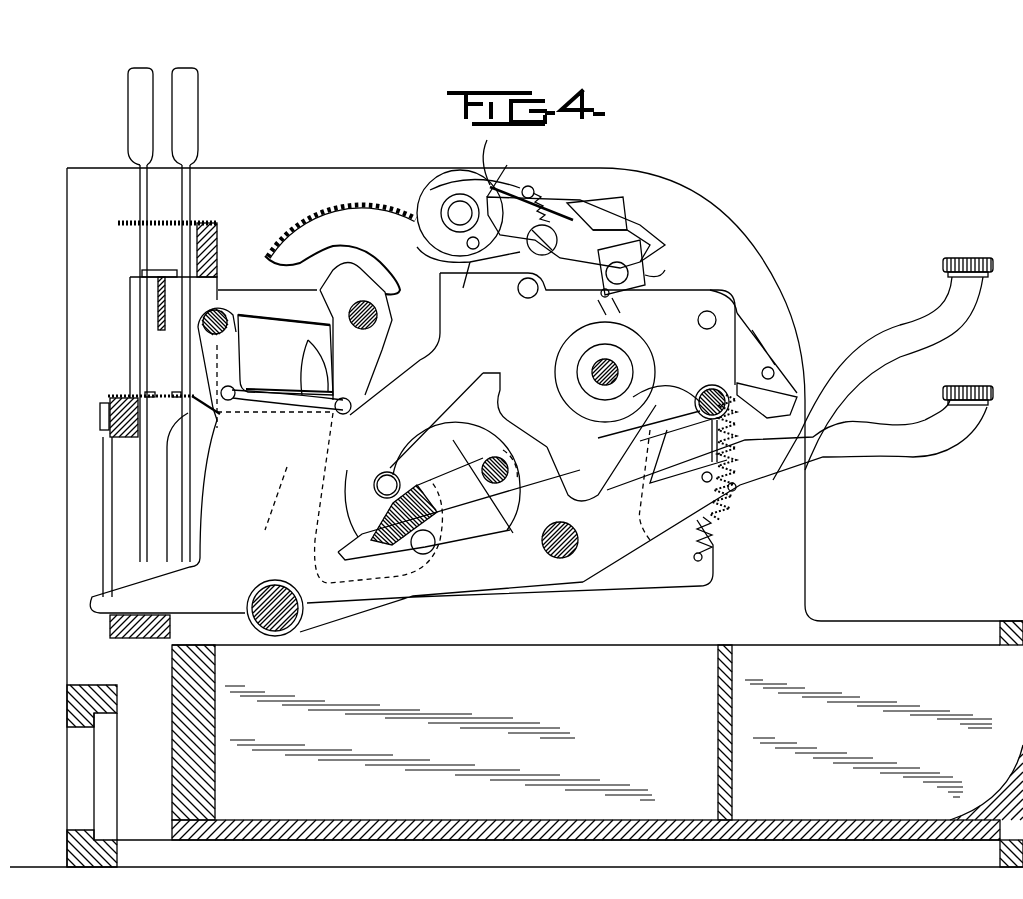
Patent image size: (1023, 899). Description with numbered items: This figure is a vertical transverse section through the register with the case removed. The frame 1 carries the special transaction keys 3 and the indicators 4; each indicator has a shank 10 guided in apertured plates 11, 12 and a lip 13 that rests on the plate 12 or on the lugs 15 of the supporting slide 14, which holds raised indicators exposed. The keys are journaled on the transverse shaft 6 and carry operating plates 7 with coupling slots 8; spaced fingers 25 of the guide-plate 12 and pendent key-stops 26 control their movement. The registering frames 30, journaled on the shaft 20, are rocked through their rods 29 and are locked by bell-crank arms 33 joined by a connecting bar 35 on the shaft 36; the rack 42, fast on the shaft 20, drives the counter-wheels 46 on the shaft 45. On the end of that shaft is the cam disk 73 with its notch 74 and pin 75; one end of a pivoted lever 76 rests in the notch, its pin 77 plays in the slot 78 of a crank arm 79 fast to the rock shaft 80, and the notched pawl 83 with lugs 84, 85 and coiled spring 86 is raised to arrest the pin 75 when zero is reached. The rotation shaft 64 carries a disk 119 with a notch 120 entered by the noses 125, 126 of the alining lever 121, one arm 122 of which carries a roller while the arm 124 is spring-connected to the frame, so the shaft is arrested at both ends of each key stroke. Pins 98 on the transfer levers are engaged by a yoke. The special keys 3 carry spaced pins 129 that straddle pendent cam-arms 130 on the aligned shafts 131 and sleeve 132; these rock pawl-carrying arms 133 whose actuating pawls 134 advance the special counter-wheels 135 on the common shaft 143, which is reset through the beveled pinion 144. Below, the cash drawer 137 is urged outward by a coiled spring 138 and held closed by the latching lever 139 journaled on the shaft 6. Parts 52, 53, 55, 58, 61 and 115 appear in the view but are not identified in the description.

The frame 1 is at (222, 256).
The special transaction keys 3 is at (788, 420).
The indicators 4 is at (128, 130).
The transverse shaft 6 is at (578, 534).
The operating plates 7 is at (167, 470).
The coupling slots 8 is at (345, 545).
The shank 10 is at (182, 180).
The guiding plate 11 is at (118, 223).
The guide-plate 12 is at (118, 396).
The supporting lips 13 is at (175, 392).
The supporting slide 14 is at (158, 290).
The supporting lugs 15 is at (142, 272).
The transverse shaft 20 is at (377, 314).
The fingers 25 is at (233, 402).
The key-stops 26 is at (103, 465).
The operating rod 29 is at (352, 406).
The registering frames 30 is at (330, 275).
The locking arms 33 is at (300, 352).
The connecting bar 35 is at (232, 400).
The transverse shaft 36 is at (230, 310).
The rack 42 is at (340, 249).
The transverse shaft 45 is at (455, 212).
The counter-wheels 46 is at (430, 188).
The arm 52 is at (615, 195).
The hook 53 is at (487, 157).
The spring 55 is at (540, 192).
The pawl 58 is at (621, 222).
The pin 61 is at (459, 241).
The rotation shaft 64 is at (615, 366).
The cam disk 73 is at (445, 187).
The notch 74 is at (500, 173).
The pin 75 is at (463, 277).
The pivoted lever 76 is at (560, 200).
The pin 77 is at (598, 300).
The slot 78 is at (632, 303).
The crank arm 79 is at (628, 266).
The rock shaft 80 is at (628, 273).
The notched pawl 83 is at (511, 288).
The stop lug 84 is at (593, 205).
The stop lug 85 is at (557, 240).
The coiled spring 86 is at (628, 264).
The pins 98 is at (665, 273).
The roller 115 is at (395, 548).
The disk 119 is at (640, 362).
The notch 120 is at (632, 400).
The alining lever 121 is at (578, 450).
The arm 122 is at (432, 479).
The arm 124 is at (625, 562).
The alining nose 125 is at (500, 360).
The alining nose 126 is at (655, 383).
The spaced pins 129 is at (700, 478).
The cam-arms 130 is at (250, 615).
The transverse shafts 131 is at (295, 338).
The sleeve 132 is at (780, 368).
The pawl-carrying arm 133 is at (767, 396).
The actuating pawl 134 is at (760, 332).
The special counter-wheels 135 is at (735, 298).
The cash drawer 137 is at (420, 486).
The coiled spring 138 is at (712, 525).
The latching lever 139 is at (287, 467).
The common shaft 143 is at (698, 320).
The beveled pinion 144 is at (460, 510).